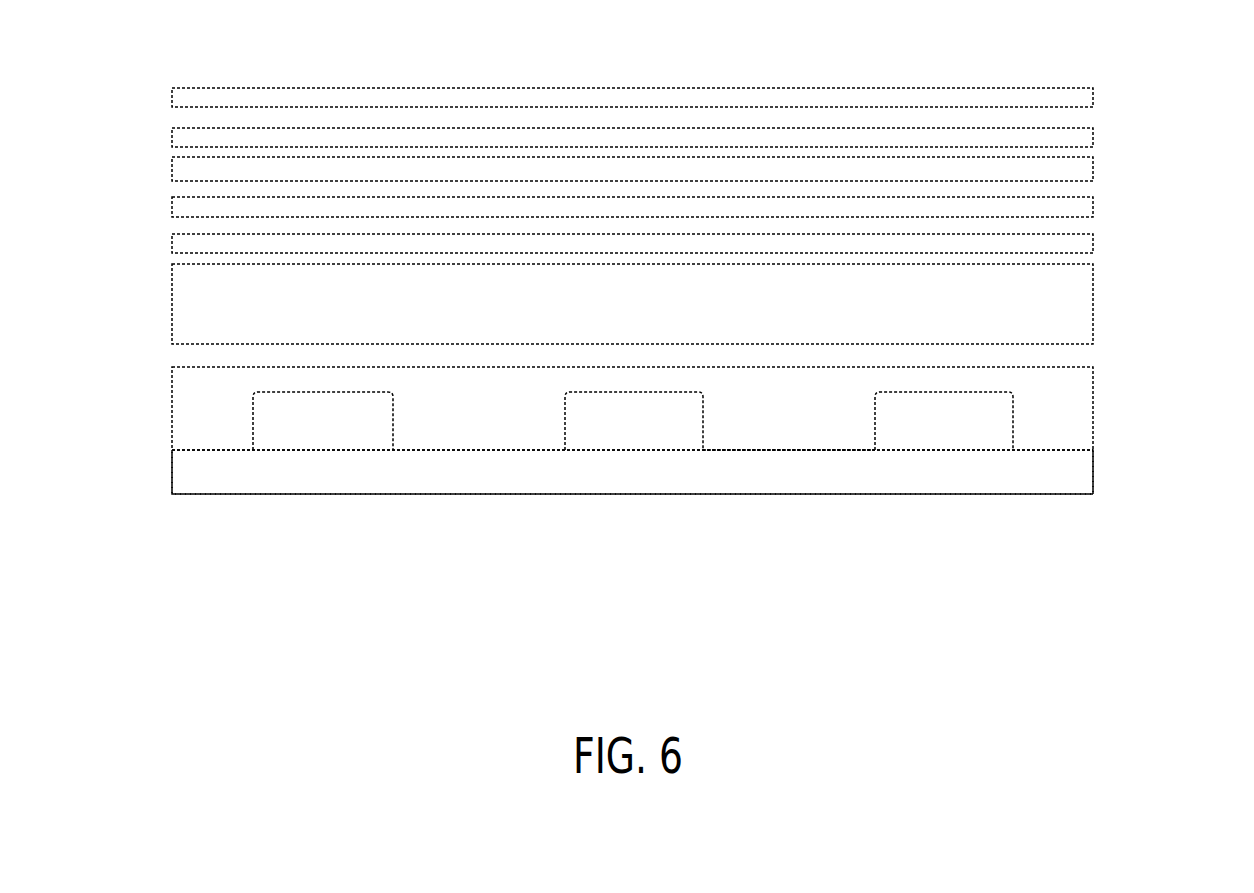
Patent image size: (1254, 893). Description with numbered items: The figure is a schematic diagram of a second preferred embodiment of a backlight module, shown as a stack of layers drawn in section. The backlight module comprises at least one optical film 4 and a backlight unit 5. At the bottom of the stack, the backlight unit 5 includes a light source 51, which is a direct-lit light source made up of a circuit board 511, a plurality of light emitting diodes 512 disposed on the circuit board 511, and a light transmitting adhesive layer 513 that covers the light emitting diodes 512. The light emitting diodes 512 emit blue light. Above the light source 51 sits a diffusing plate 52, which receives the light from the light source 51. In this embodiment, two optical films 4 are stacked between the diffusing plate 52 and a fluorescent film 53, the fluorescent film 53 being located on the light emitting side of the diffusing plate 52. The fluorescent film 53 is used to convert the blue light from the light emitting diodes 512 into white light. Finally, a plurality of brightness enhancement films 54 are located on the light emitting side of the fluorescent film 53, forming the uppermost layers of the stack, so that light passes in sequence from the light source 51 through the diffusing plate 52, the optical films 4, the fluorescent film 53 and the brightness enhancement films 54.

The optical film 4 is at (1088, 243).
The backlight unit 5 is at (665, 487).
The light source 51 is at (1048, 497).
The circuit board 511 is at (225, 483).
The light emitting diodes 512 is at (603, 440).
The light transmitting adhesive layer 513 is at (790, 422).
The diffusing plate 52 is at (1083, 310).
The fluorescent film 53 is at (1093, 172).
The brightness enhancement films 54 is at (1093, 138).